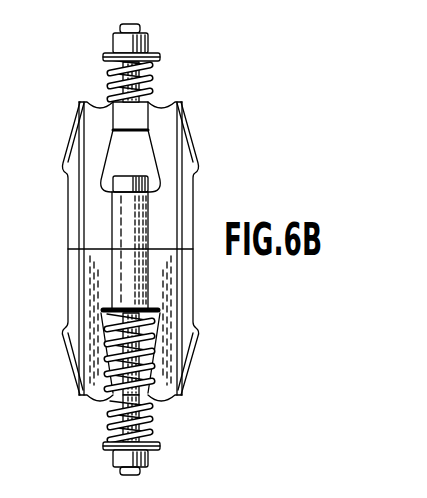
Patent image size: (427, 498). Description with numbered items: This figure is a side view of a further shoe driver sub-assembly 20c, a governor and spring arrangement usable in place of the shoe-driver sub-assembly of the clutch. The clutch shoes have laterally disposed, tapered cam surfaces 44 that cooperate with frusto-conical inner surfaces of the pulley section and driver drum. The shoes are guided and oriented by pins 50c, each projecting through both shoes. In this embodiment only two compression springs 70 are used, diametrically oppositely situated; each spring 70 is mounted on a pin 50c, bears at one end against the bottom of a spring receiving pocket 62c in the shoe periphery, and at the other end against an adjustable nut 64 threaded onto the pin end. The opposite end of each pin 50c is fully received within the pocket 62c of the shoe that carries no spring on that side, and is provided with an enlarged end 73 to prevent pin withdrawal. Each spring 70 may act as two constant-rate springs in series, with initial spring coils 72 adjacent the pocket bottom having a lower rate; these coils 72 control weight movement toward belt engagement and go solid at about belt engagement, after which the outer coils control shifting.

The shoe driver sub-assembly 20c is at (123, 242).
The tapered cam surface 44 is at (200, 163).
The pin 50c is at (138, 72).
The spring receiving pocket 62c is at (120, 234).
The adjustable nut 64 is at (118, 45).
The compression spring 70 is at (162, 92).
The initial spring coils 72 is at (150, 316).
The enlarged end 73 is at (142, 175).